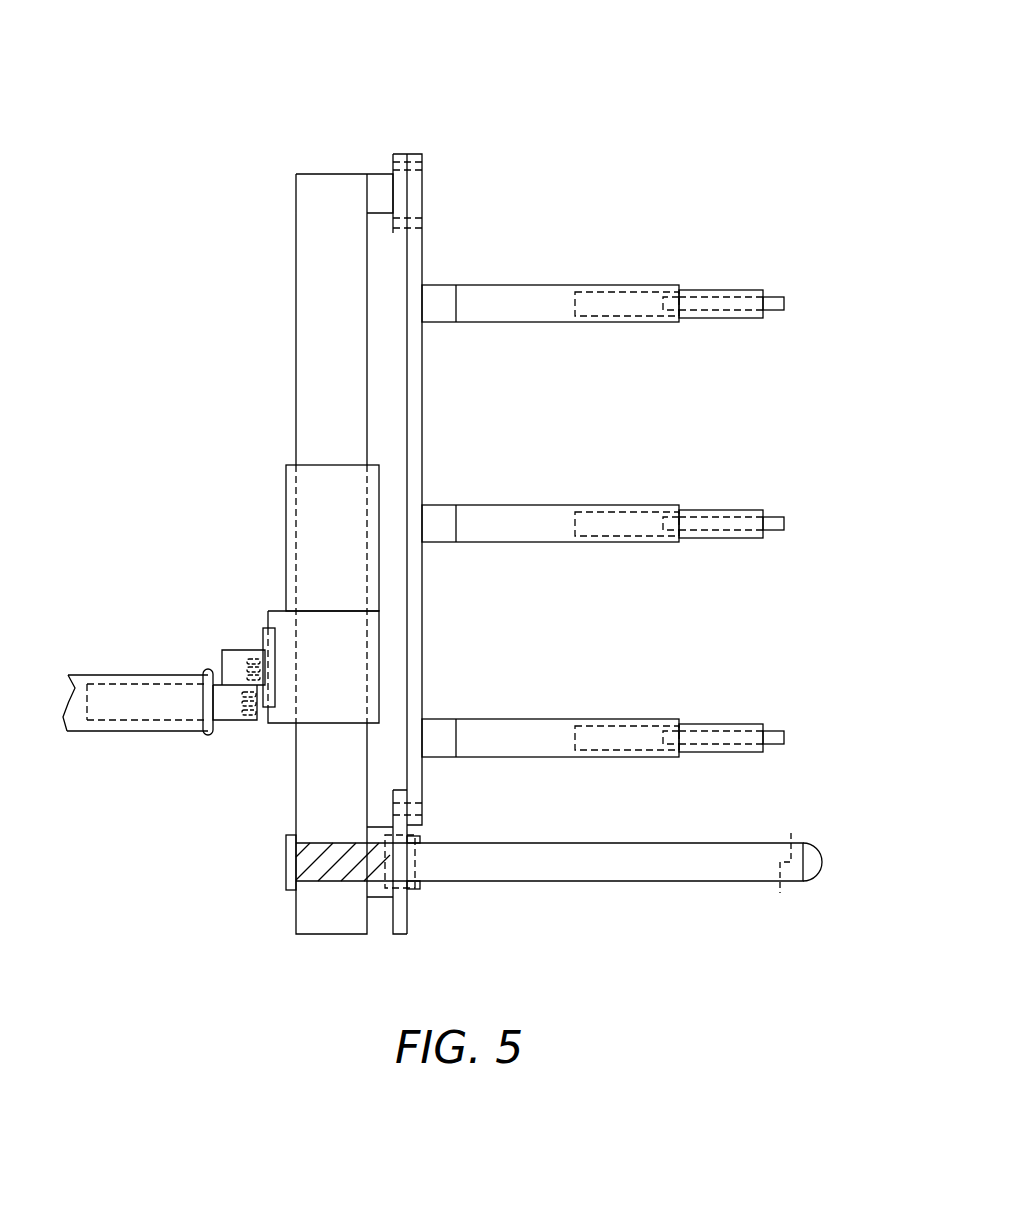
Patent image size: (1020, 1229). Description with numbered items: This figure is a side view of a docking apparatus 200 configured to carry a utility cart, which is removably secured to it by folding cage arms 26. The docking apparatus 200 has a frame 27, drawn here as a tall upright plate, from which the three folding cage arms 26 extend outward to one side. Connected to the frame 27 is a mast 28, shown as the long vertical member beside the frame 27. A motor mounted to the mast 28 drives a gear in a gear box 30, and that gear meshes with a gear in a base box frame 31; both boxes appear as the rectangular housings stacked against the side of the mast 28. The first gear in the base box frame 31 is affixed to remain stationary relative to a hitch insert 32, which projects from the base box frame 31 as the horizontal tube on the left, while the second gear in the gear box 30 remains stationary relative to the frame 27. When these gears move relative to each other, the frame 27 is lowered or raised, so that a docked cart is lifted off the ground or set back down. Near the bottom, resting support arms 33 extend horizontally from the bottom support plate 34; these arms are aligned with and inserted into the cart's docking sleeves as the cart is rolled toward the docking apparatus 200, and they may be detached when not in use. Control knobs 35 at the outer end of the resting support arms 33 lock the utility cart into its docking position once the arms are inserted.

The docking apparatus 200 is at (452, 76).
The folding cage arms 26 is at (665, 322).
The frame 27 is at (413, 435).
The mast 28 is at (312, 224).
The gear box 30 is at (325, 483).
The base box frame 31 is at (343, 652).
The hitch insert 32 is at (228, 709).
The resting support arms 33 is at (595, 868).
The bottom support plate 34 is at (400, 913).
The control knobs 35 is at (813, 862).